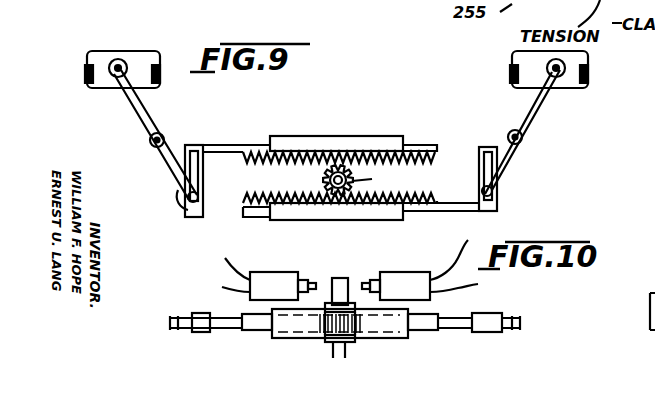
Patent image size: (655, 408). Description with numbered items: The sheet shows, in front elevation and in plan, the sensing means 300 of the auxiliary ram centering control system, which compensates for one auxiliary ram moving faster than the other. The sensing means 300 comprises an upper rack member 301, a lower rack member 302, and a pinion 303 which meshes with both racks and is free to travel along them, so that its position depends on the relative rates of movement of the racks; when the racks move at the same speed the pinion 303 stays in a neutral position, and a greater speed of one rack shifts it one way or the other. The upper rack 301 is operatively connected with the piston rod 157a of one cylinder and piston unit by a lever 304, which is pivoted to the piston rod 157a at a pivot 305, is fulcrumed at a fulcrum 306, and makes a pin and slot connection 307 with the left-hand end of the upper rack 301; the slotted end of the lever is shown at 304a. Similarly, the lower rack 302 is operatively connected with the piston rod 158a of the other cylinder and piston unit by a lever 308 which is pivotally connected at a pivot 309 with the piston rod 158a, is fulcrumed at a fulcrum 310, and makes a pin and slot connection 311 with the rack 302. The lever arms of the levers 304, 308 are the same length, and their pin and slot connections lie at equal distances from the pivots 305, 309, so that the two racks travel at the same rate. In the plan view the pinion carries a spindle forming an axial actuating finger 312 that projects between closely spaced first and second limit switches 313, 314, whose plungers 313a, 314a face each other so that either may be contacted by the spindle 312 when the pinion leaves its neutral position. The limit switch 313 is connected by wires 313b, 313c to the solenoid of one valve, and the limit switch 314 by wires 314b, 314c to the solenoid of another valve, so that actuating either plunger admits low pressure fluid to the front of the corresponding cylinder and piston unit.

In FIG. 10, the sensing means 300 is at (341, 276).
In FIG. 9, the upper rack member 301 is at (266, 143).
In FIG. 10, the upper rack member 301 is at (258, 326).
In FIG. 9, the lower rack member 302 is at (252, 210).
In FIG. 9, the pinion 303 is at (379, 184).
In FIG. 10, the pinion 303 is at (368, 330).
In FIG. 9, the lever 304 is at (135, 110).
In FIG. 9, the slotted bracket 304a is at (202, 200).
In FIG. 9, the pivot 305 is at (116, 60).
In FIG. 9, the fulcrum 306 is at (150, 141).
In FIG. 9, the pin and slot connection 307 is at (204, 146).
In FIG. 9, the lever 308 is at (523, 107).
In FIG. 9, the pivot 309 is at (552, 88).
In FIG. 9, the fulcrum 310 is at (523, 138).
In FIG. 9, the pin and slot connection 311 is at (494, 192).
In FIG. 9, the axial actuating finger 312 is at (322, 184).
In FIG. 10, the axial actuating finger 312 is at (352, 300).
In FIG. 10, the first limit switch 313 is at (425, 272).
In FIG. 10, the plunger 313a is at (376, 274).
In FIG. 10, the wire 313b is at (456, 252).
In FIG. 10, the wire 313c is at (464, 294).
In FIG. 10, the second limit switch 314 is at (282, 267).
In FIG. 10, the plunger 314a is at (318, 276).
In FIG. 10, the wire 314b is at (224, 258).
In FIG. 10, the wire 314c is at (222, 287).
In FIG. 9, the piston rod 157a is at (138, 55).
In FIG. 9, the piston rod 158a is at (514, 64).